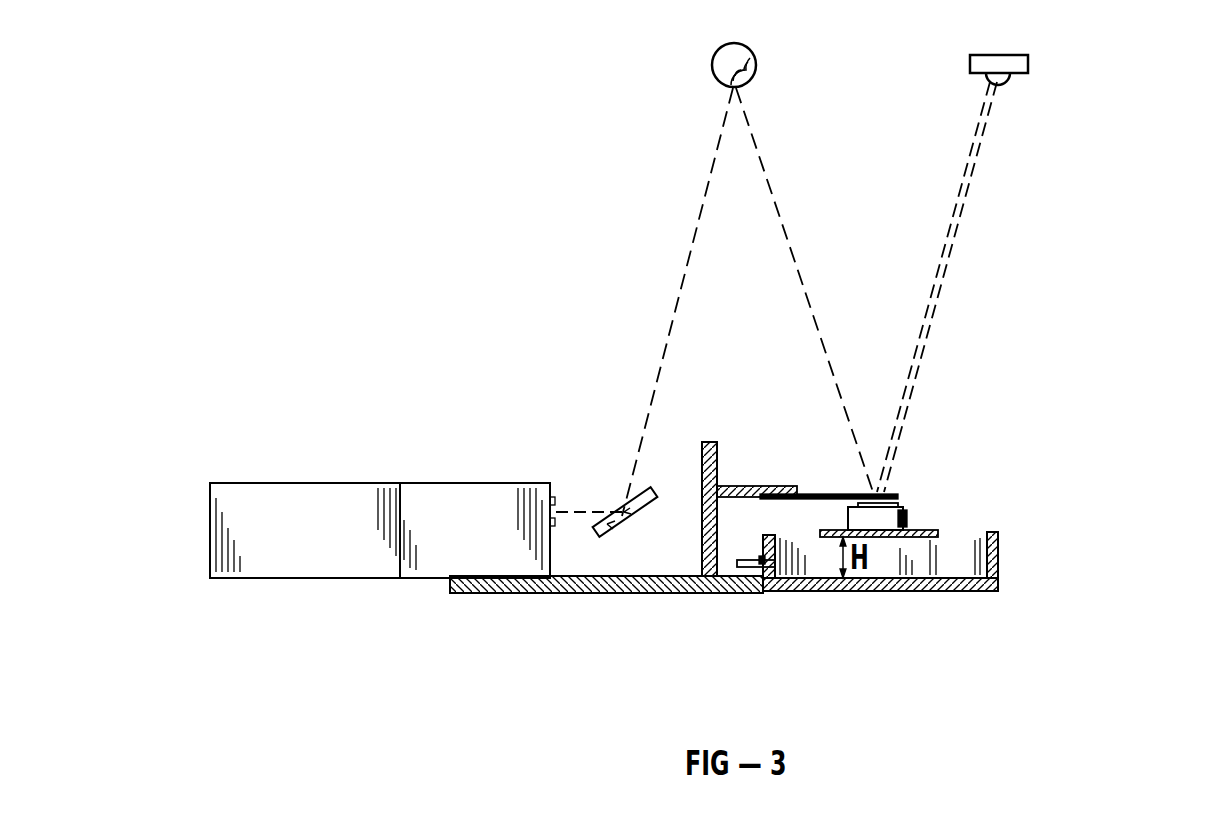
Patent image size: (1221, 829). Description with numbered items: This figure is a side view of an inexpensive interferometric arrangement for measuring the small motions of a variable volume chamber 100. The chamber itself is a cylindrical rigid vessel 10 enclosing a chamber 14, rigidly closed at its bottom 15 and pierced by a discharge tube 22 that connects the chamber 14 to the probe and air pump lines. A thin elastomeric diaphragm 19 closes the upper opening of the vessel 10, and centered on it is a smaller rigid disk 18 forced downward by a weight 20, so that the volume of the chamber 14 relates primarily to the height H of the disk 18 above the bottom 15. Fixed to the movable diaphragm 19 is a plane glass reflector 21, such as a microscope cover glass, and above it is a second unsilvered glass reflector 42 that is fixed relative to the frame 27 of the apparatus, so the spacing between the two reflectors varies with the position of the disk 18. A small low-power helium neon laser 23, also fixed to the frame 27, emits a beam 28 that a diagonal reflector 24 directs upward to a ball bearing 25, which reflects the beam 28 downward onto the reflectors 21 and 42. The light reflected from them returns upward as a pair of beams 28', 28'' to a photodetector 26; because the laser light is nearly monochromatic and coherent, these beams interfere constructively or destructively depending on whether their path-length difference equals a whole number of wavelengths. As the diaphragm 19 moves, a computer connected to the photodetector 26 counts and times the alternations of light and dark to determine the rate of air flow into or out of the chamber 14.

The vessel 10 is at (997, 560).
The chamber 14 is at (942, 563).
The bottom 15 is at (905, 593).
The disk 18 is at (940, 527).
The diaphragm 19 is at (803, 533).
The weight 20 is at (910, 513).
The plane glass reflector 21 is at (903, 507).
The discharge tube 22 is at (740, 593).
The helium neon laser 23 is at (455, 482).
The diagonal reflector 24 is at (648, 488).
The ball bearing 25 is at (1168, 597).
The photodetector 26 is at (1118, 132).
The frame 27 is at (625, 593).
The beam 28 is at (659, 302).
The reflected light beam 28' is at (863, 287).
The reflected light beam 28'' is at (974, 287).
The unsilvered glass reflector 42 is at (890, 497).
The variable volume chamber 100 is at (841, 604).